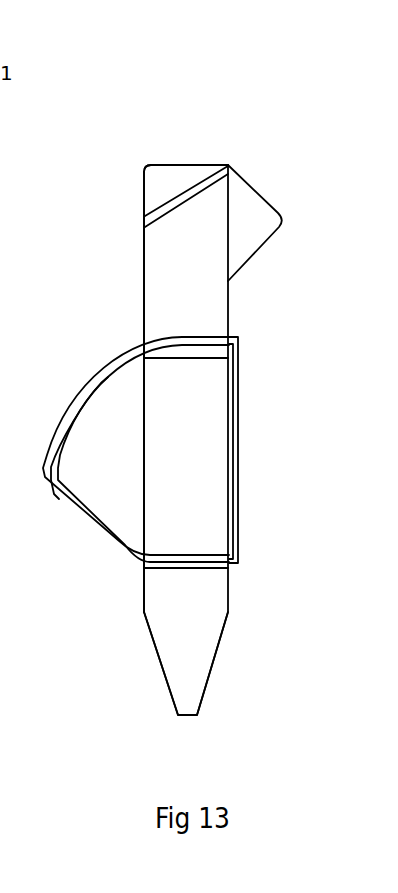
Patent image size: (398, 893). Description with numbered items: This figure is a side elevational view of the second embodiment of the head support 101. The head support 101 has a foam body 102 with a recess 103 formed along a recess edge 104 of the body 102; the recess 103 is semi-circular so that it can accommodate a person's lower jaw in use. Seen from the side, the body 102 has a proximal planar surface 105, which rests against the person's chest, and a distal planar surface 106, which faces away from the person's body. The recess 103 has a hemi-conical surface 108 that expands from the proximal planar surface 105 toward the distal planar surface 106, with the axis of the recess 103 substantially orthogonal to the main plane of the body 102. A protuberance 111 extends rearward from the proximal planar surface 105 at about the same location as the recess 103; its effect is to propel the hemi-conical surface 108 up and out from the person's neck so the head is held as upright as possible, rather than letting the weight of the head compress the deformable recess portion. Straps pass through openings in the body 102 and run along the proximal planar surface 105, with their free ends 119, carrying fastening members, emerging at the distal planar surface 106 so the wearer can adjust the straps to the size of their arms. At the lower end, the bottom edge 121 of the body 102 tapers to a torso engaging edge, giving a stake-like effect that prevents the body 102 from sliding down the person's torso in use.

The head support 101 is at (283, 93).
The body 102 is at (203, 305).
The recess 103 is at (172, 173).
The recess edge 104 is at (208, 163).
The proximal planar surface 105 is at (230, 328).
The distal planar surface 106 is at (143, 298).
The hemi-conical surface 108 is at (170, 202).
The protuberance 111 is at (262, 205).
The free ends 119 is at (77, 412).
The bottom edge 121 is at (178, 716).